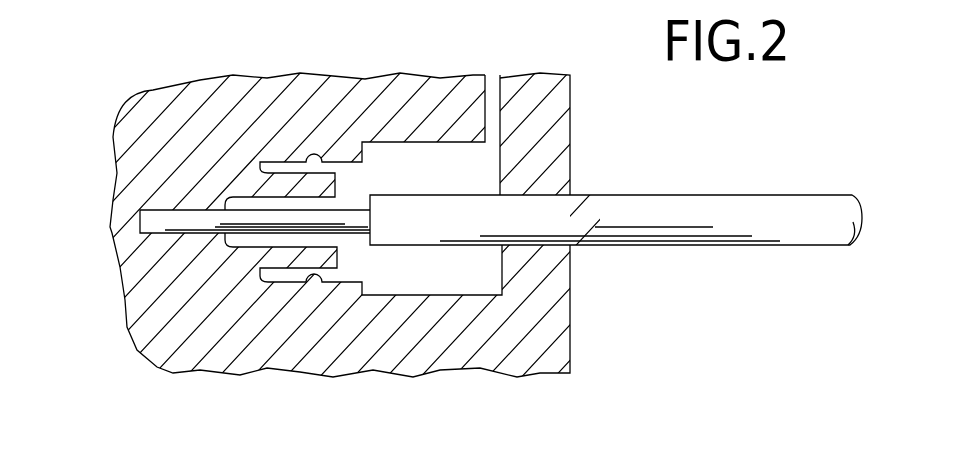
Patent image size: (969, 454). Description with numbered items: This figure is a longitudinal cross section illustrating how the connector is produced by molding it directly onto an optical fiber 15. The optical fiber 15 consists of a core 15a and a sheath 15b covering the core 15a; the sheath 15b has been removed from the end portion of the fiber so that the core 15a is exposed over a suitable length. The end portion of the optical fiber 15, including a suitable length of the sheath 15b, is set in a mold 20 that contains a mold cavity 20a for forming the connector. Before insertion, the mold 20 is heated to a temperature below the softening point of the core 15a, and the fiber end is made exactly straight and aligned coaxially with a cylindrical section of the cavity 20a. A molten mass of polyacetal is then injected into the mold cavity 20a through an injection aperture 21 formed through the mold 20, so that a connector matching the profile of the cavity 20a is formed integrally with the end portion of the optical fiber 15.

The mold 20 is at (558, 140).
The mold cavity 20a is at (382, 290).
The injection aperture 21 is at (492, 80).
The optical fiber 15 is at (700, 226).
The core 15a is at (148, 223).
The sheath 15b is at (583, 247).